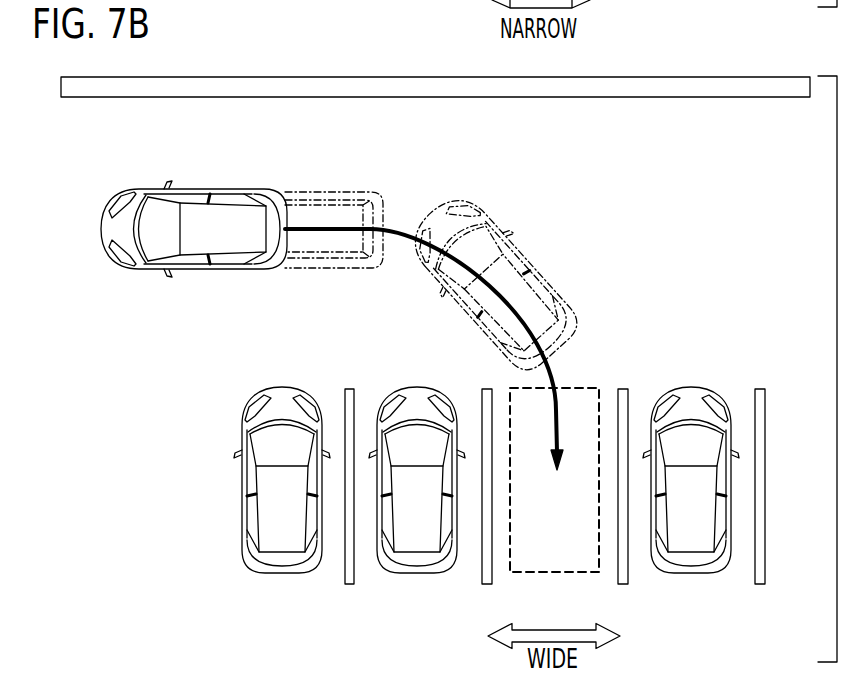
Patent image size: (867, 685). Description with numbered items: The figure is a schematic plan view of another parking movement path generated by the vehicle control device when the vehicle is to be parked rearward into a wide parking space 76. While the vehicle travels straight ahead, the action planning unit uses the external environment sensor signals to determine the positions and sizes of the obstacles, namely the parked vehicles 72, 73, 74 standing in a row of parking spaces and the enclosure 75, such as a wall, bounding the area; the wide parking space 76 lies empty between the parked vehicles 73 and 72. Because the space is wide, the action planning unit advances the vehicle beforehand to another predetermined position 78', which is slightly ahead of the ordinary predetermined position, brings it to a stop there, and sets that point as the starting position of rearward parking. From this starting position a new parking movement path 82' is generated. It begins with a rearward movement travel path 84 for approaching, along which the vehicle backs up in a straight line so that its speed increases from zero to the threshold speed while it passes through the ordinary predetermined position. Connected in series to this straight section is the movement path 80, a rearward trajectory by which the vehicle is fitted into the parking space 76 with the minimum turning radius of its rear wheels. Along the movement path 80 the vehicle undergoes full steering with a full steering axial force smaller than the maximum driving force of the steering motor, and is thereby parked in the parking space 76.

The vehicle 72 is at (690, 576).
The vehicle 73 is at (419, 576).
The vehicle 74 is at (281, 576).
The enclosure 75 is at (627, 77).
The wide parking space 76 is at (558, 544).
The predetermined position 78' is at (184, 235).
The movement path (rearward trajectory) 80 is at (445, 292).
The parking movement path 82' is at (424, 349).
The rearward movement travel path 84 is at (336, 235).